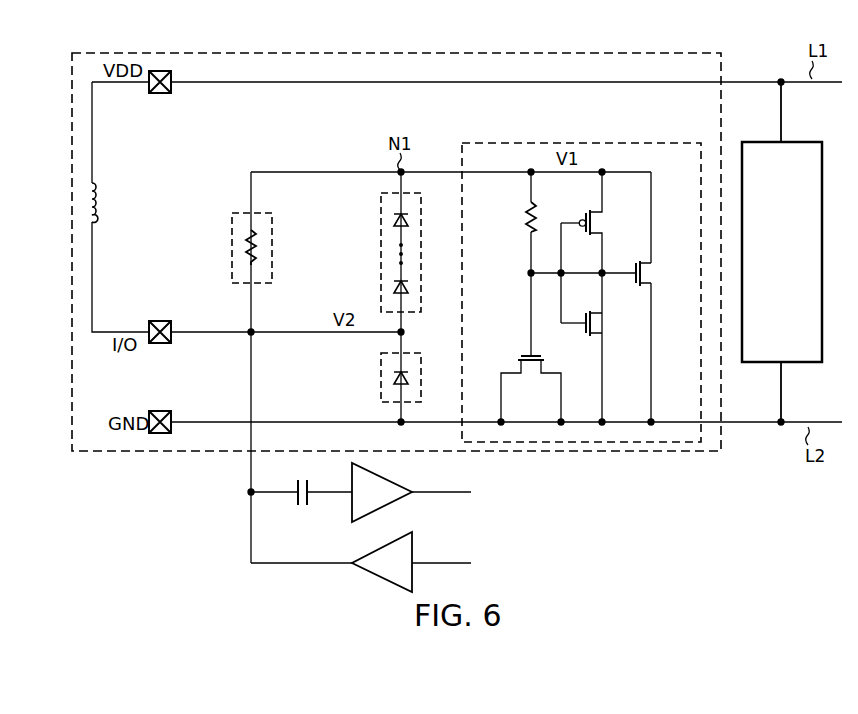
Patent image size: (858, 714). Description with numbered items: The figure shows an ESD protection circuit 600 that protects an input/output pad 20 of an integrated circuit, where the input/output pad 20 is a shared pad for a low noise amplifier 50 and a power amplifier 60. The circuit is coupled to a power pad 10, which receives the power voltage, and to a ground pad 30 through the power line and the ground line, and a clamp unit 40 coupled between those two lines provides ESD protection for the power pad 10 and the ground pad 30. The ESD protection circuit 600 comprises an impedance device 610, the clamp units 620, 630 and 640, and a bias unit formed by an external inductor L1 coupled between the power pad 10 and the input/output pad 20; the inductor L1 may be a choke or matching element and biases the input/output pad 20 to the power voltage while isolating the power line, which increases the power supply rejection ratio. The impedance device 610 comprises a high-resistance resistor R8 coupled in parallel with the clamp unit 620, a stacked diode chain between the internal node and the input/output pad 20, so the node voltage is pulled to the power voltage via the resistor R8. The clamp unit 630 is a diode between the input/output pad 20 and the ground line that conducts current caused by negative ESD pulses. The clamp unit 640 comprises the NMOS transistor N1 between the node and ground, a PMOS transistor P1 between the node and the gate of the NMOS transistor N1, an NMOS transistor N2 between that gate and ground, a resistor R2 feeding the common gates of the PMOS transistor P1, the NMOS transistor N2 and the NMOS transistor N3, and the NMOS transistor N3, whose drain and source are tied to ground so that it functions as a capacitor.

The ESD protection circuit 600 is at (395, 51).
The power pad 10 is at (170, 95).
The I/O pad 20 is at (170, 320).
The ground pad 30 is at (170, 410).
The clamp unit 40 is at (782, 252).
The low noise amplifier 50 is at (382, 476).
The power amplifier 60 is at (385, 547).
The impedance device 610 is at (240, 248).
The clamp unit 620 is at (380, 252).
The clamp unit 630 is at (378, 380).
The clamp unit 640 is at (580, 142).
The inductor L1 is at (100, 203).
The resistor R8 is at (262, 246).
The resistor R2 is at (525, 249).
The PMOS transistor P1 is at (604, 224).
The NMOS transistor N1 is at (652, 274).
The NMOS transistor N2 is at (598, 325).
The NMOS transistor N3 is at (531, 378).